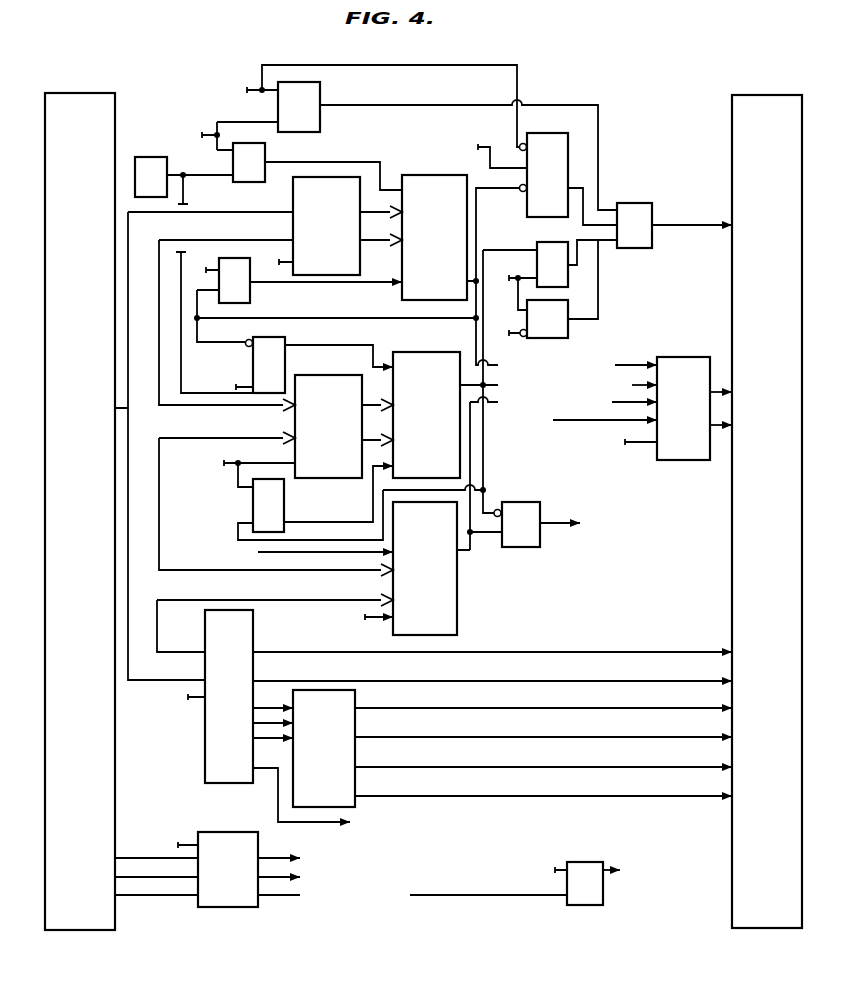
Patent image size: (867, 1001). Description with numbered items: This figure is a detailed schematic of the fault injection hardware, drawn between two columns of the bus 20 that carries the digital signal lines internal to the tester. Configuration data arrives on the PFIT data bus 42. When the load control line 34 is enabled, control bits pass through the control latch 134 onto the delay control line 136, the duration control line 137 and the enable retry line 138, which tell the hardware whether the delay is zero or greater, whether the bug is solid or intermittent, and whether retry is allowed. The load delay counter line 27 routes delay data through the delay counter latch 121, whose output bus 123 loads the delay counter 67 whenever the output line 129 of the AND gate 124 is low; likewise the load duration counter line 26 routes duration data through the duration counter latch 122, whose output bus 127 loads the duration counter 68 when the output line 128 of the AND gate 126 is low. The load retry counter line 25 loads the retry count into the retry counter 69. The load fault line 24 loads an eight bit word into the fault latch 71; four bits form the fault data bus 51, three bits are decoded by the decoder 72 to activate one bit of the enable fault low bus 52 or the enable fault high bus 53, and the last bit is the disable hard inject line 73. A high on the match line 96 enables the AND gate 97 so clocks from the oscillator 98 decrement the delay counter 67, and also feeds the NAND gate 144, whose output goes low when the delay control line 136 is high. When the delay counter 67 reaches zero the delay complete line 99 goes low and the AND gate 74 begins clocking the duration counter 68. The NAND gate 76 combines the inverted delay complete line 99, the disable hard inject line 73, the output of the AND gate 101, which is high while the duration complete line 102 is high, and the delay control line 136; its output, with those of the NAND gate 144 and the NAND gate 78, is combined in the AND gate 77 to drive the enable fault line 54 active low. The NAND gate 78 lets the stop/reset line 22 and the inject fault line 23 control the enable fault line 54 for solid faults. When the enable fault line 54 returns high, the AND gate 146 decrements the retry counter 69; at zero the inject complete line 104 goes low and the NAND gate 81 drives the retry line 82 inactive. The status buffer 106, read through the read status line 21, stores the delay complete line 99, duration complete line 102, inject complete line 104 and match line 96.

The bus 20 is at (97, 93).
The delay control line 136 is at (258, 89).
The NAND gate 144 is at (320, 90).
The match line 96 is at (217, 124).
The oscillator 98 is at (167, 166).
The AND gate 97 is at (246, 185).
The delay counter latch 121 is at (360, 266).
The output bus 123 is at (389, 236).
The delay counter 67 is at (405, 177).
The disable hard inject line 73 is at (505, 168).
The NAND gate 76 is at (569, 166).
The AND gate 77 is at (637, 203).
The enable fault line 54 is at (668, 229).
The delay complete line 99 is at (477, 223).
The load delay counter line 27 is at (239, 266).
The AND gate 124 is at (250, 288).
The output line 129 is at (360, 286).
The AND gate 74 is at (286, 360).
The output bus 127 is at (376, 385).
The duration counter latch 122 is at (337, 380).
The duration counter 68 is at (418, 356).
The duration complete line 102 is at (484, 443).
The inject complete line 104 is at (475, 549).
The stop/reset line 22 is at (513, 289).
The AND gate 101 is at (568, 275).
The inject fault line 23 is at (508, 333).
The NAND gate 78 is at (568, 334).
The status buffer 106 is at (686, 463).
The read status line 21 is at (630, 442).
The PFIT data bus 42 is at (128, 446).
The load duration counter line 26 is at (250, 470).
The AND gate 126 is at (285, 508).
The output line 128 is at (336, 522).
The retry counter 69 is at (457, 590).
The load retry counter line 25 is at (368, 617).
The NAND gate 81 is at (516, 502).
The retry line 82 is at (560, 520).
The fault latch 71 is at (205, 753).
The load fault line 24 is at (186, 697).
The fault data bus 51 is at (525, 652).
The decoder 72 is at (357, 697).
The enable fault low bus 52 is at (606, 708).
The enable fault high bus 53 is at (586, 767).
The control latch 134 is at (215, 907).
The load control line 34 is at (177, 845).
The enable retry line 138 is at (272, 880).
The duration control line 137 is at (292, 896).
The AND gate 146 is at (590, 862).